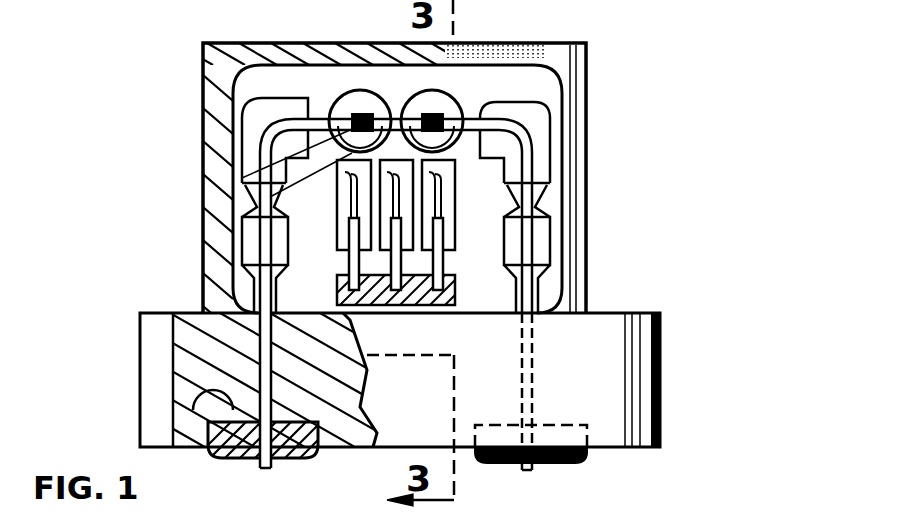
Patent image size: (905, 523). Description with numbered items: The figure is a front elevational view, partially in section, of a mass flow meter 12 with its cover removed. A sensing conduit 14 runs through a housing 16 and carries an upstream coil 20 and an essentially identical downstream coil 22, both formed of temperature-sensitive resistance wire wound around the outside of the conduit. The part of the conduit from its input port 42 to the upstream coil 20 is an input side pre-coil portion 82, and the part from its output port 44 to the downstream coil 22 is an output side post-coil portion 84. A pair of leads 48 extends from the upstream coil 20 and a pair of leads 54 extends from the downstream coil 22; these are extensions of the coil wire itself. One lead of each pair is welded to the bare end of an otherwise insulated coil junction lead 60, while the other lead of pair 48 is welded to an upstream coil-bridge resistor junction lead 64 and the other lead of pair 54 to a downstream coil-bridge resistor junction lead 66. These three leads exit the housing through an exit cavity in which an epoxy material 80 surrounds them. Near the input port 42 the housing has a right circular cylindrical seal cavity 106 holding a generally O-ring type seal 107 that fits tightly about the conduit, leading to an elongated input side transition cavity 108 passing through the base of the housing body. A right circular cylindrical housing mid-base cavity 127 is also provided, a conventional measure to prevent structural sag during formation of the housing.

The mass flow meter 12 is at (650, 233).
The sensing conduit 14 is at (560, 203).
The housing 16 is at (588, 289).
The upstream coil 20 is at (341, 98).
The downstream coil 22 is at (437, 118).
The input port 42 is at (266, 468).
The output port 44 is at (528, 472).
The pair of leads 48 is at (242, 178).
The pair of leads 54 is at (445, 172).
The coil junction lead 60 is at (415, 220).
The upstream coil-bridge resistor junction lead 64 is at (351, 216).
The downstream coil-bridge resistor junction lead 66 is at (437, 213).
The epoxy material 80 is at (432, 308).
The input side pre-coil portion 82 is at (242, 135).
The output side post-coil portion 84 is at (514, 138).
The seal cavity 106 is at (195, 402).
The O-ring type seal 107 is at (233, 460).
The input side transition cavity 108 is at (248, 333).
The housing mid-base cavity 127 is at (358, 392).